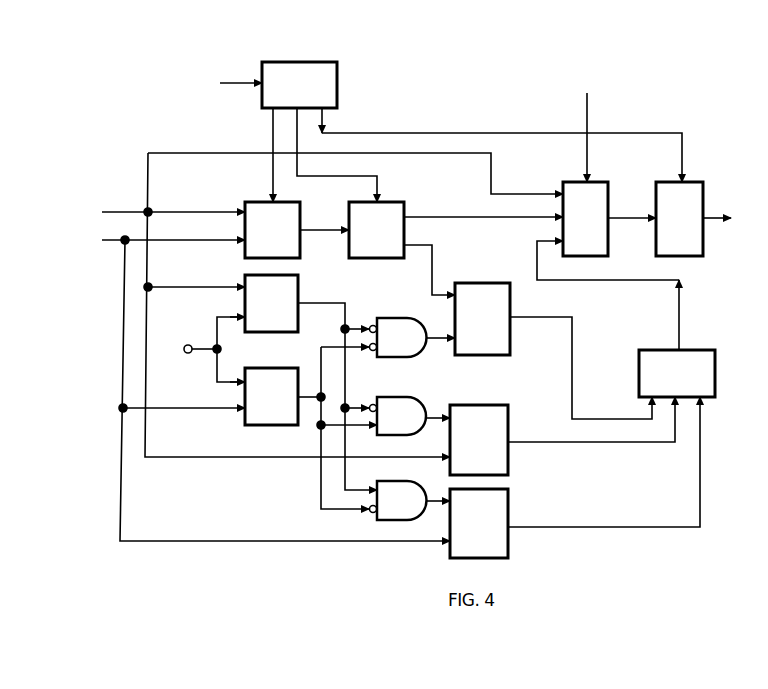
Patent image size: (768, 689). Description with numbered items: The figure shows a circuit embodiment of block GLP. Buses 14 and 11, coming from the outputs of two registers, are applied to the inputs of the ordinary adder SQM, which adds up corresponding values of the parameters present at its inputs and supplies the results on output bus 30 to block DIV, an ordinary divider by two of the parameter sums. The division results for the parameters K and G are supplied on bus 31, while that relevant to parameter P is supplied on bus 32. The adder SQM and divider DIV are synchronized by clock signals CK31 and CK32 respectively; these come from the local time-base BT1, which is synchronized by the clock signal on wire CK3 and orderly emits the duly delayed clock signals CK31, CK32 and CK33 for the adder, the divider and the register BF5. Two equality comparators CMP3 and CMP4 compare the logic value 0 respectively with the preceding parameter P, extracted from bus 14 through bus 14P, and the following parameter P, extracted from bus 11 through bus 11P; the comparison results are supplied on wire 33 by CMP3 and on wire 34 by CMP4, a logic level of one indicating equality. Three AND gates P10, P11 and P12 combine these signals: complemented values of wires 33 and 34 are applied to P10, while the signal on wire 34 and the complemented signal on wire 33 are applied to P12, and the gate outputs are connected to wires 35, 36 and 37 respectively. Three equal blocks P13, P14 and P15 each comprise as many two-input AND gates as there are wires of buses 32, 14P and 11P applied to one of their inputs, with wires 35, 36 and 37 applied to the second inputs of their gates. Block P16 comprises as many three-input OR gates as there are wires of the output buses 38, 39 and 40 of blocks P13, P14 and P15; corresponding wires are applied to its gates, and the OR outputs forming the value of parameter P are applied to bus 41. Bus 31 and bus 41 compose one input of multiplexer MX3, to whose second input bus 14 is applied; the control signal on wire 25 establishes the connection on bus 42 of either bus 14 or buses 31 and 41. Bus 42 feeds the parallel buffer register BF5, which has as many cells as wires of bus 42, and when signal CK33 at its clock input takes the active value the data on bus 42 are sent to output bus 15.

The bus 14 is at (164, 183).
The bus 11 is at (261, 386).
The bus 14P is at (151, 263).
The bus 11P is at (124, 296).
The wire 25 is at (585, 127).
The output bus 15 is at (728, 222).
The output bus 30 is at (318, 231).
The bus 31 is at (483, 219).
The bus 32 is at (435, 267).
The wire 33 is at (348, 377).
The wire 34 is at (320, 480).
The wire 35 is at (436, 337).
The wire 36 is at (435, 416).
The wire 37 is at (430, 499).
The bus 38 is at (575, 361).
The bus 39 is at (626, 443).
The bus 40 is at (626, 527).
The bus 41 is at (680, 321).
The bus 42 is at (628, 219).
The local time-base BT1 is at (338, 83).
The clock signal CK3 is at (220, 84).
The clock signal CK31 is at (270, 130).
The clock signal CK32 is at (378, 180).
The clock signal CK33 is at (454, 133).
The adder SQM is at (254, 200).
The divider DIV is at (406, 230).
The equality comparator CMP3 is at (300, 284).
The equality comparator CMP4 is at (270, 367).
The logic value 0 is at (199, 349).
The AND gate P10 is at (400, 357).
The AND gate P11 is at (414, 436).
The AND gate P12 is at (414, 521).
The block P13 is at (512, 341).
The block P14 is at (512, 426).
The block P15 is at (512, 500).
The block P16 is at (716, 379).
The multiplexer MX3 is at (608, 258).
The parallel buffer register BF5 is at (705, 251).
The block GLP is at (714, 76).